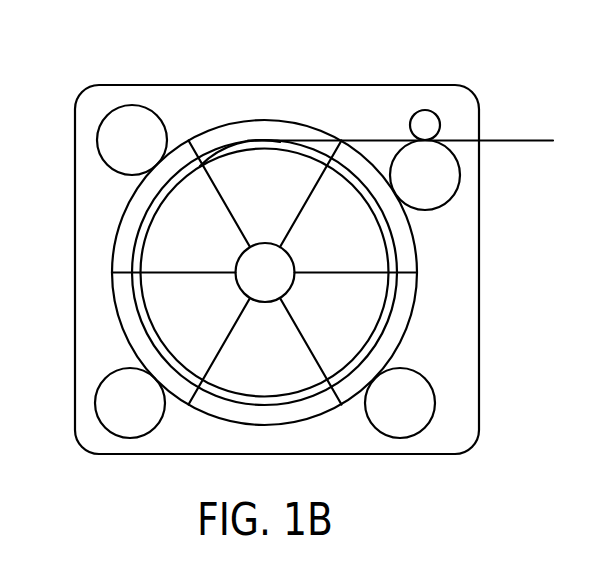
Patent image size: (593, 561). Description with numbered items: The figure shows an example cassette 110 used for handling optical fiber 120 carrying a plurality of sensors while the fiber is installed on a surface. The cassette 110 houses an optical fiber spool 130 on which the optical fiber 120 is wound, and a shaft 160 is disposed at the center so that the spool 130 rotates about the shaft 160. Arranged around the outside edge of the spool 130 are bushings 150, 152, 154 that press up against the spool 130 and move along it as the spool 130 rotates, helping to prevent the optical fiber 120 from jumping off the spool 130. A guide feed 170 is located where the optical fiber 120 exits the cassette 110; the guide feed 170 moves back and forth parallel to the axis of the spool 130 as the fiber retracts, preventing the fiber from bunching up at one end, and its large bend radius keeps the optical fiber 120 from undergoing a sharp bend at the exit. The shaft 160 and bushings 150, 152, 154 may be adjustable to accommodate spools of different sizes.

The cassette 110 is at (277, 90).
The optical fiber 120 is at (527, 139).
The optical fiber spool 130 is at (125, 237).
The bushing 150 is at (117, 122).
The bushing 152 is at (130, 404).
The bushing 154 is at (408, 402).
The shaft 160 is at (268, 264).
The guide feed 170 is at (440, 155).